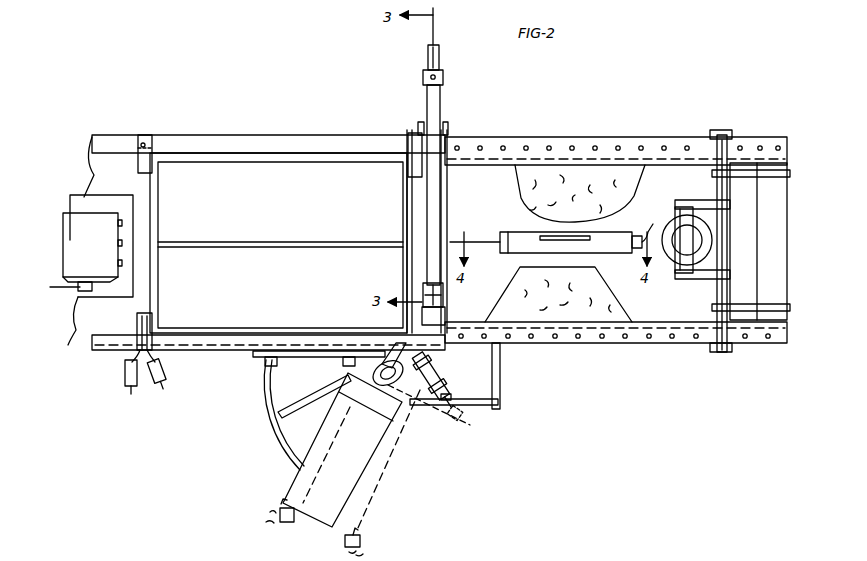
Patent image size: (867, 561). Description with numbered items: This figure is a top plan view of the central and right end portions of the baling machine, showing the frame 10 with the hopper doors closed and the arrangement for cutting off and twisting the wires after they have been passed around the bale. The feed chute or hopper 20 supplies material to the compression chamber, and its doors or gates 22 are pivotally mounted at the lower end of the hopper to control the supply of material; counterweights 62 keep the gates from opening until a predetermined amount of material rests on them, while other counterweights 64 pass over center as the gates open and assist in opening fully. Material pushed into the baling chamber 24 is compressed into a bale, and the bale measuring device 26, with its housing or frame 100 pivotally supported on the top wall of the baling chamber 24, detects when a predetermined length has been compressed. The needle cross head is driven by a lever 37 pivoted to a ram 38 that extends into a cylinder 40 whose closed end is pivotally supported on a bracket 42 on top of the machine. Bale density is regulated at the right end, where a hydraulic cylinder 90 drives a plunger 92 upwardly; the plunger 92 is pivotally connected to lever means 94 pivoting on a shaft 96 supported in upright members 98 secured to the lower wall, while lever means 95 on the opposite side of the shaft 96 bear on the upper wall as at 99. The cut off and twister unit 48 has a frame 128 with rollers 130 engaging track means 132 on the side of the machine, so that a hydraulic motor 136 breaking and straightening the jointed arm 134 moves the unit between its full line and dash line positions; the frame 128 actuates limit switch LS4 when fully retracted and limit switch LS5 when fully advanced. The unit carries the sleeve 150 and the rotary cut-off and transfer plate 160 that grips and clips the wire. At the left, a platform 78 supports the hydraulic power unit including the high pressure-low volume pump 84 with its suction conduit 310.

The frame 10 is at (247, 128).
The feed chute or hopper 20 is at (150, 207).
The doors or gates 22 is at (293, 208).
The baling chamber 24 is at (590, 176).
The bale measuring device 26 is at (520, 250).
The lever 37 is at (440, 57).
The ram 38 is at (444, 75).
The cylinder 40 is at (441, 106).
The bracket 42 is at (446, 312).
The cut off and twister unit 48 is at (376, 481).
The counterweights 62 is at (125, 374).
The counterweights 64 is at (152, 386).
The platform 78 is at (108, 195).
The pump 84 is at (90, 213).
The hydraulic cylinder 90 is at (668, 262).
The plunger 92 is at (676, 232).
The lever means 94 is at (702, 200).
The lever means 95 is at (736, 177).
The shaft 96 is at (728, 243).
The upright members 98 is at (724, 130).
The bearing point on upper wall 99 is at (784, 194).
The housing or frame 100 is at (626, 253).
The frame 128 is at (300, 484).
The rollers 130 is at (266, 362).
The track means 132 is at (253, 353).
The jointed arm 134 is at (460, 396).
The hydraulic motor 136 is at (432, 363).
The sleeve 150 is at (398, 343).
The rotary cut-off and transfer plate 160 is at (387, 381).
The suction conduit 310 is at (62, 299).
The limit switch LS4 is at (285, 522).
The limit switch LS5 is at (360, 542).